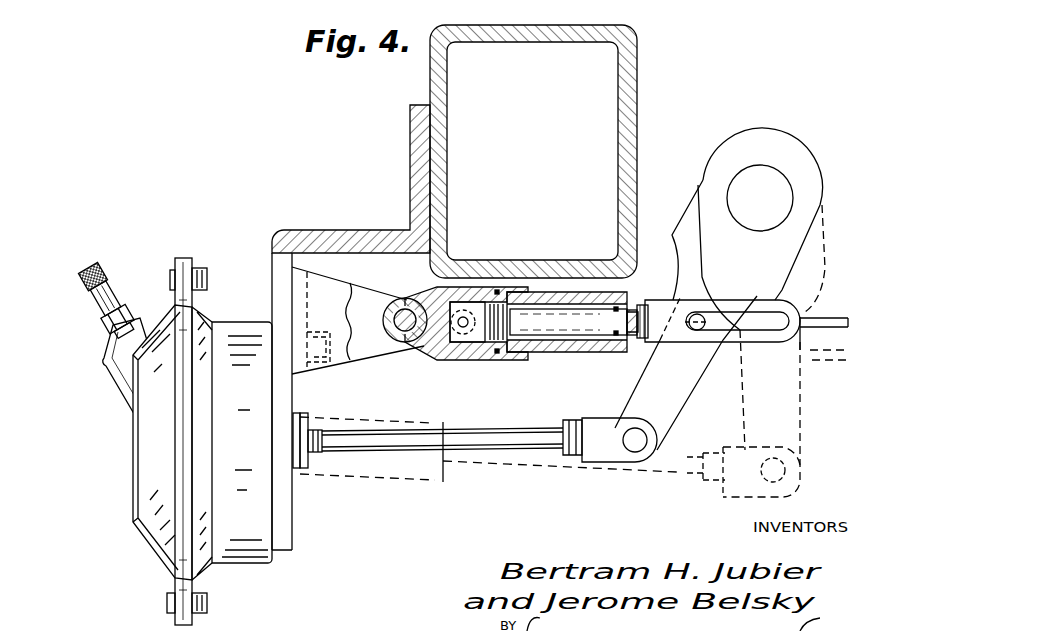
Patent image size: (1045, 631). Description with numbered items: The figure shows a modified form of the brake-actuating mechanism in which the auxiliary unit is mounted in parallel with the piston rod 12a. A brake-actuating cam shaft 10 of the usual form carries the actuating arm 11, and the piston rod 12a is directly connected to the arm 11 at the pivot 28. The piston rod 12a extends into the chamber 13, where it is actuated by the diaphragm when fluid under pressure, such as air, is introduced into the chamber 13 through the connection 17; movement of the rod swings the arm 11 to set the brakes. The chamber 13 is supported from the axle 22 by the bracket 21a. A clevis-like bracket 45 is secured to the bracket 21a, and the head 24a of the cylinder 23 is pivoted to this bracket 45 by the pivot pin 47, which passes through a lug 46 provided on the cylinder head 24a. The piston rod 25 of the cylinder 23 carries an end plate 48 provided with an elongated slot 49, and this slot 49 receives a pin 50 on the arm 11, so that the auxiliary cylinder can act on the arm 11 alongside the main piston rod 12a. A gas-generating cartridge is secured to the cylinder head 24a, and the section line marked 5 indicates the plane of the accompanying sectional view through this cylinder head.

The section line 5- 5 is at (370, 258).
The brake-actuating cam shaft 10 is at (768, 202).
The actuating arm 11 is at (642, 392).
The piston rod 12a is at (483, 440).
The chamber 13 is at (227, 337).
The connection 17 is at (110, 305).
The bracket 21a is at (331, 224).
The axle 22 is at (618, 153).
The cylinder 23 is at (600, 348).
The cylinder head 24a is at (468, 352).
The piston rod 25 is at (572, 324).
The pivot 28 is at (635, 452).
The clevis-like bracket 45 is at (358, 320).
The lug 46 is at (428, 348).
The pivot pin 47 is at (408, 302).
The end plate 48 is at (659, 315).
The elongated slot 49 is at (768, 312).
The pin 50 is at (692, 329).